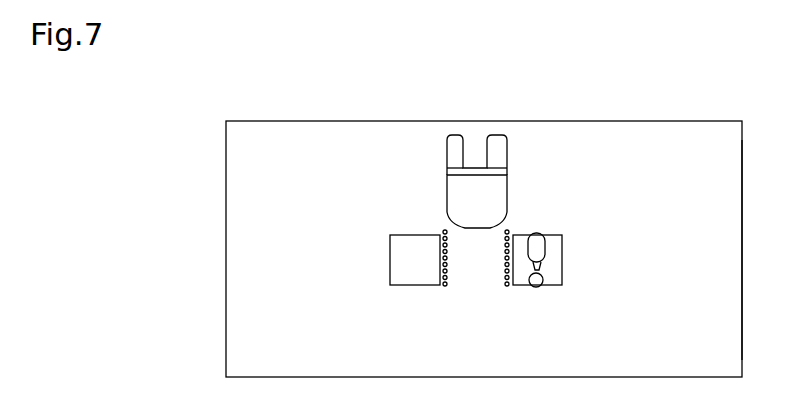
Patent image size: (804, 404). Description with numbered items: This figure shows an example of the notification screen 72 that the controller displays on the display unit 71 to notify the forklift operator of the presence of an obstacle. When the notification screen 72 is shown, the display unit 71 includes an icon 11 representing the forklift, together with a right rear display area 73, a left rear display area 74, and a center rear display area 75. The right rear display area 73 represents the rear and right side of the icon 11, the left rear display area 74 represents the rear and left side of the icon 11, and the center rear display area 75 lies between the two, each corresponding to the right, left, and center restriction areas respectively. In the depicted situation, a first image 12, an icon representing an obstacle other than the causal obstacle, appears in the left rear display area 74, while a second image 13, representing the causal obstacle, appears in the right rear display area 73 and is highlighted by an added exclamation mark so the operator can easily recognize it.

The icon 11 is at (448, 168).
The first image 12 is at (393, 232).
The second image 13 is at (534, 233).
The display unit 71 is at (618, 121).
The notification screen 72 is at (705, 168).
The right rear display area 73 is at (510, 288).
The left rear display area 74 is at (442, 288).
The center rear display area 75 is at (473, 272).